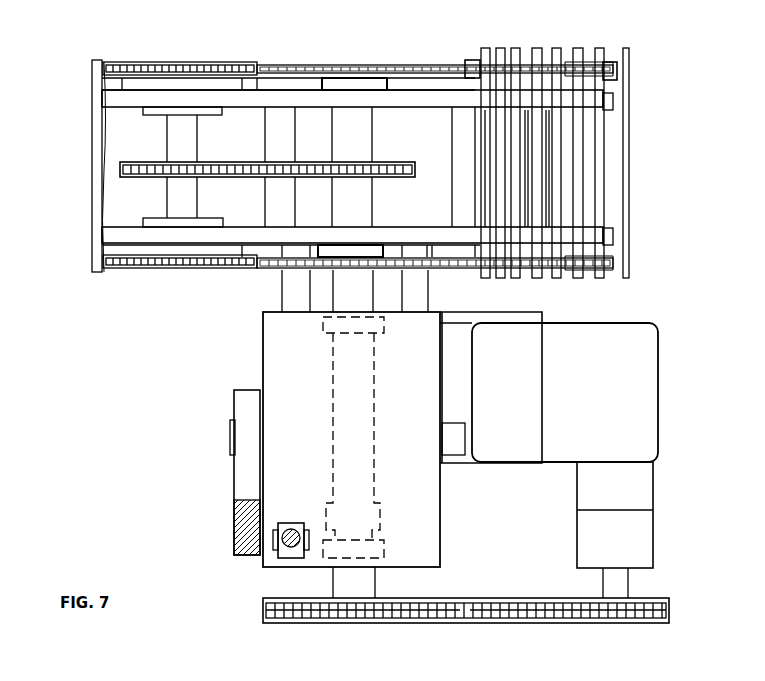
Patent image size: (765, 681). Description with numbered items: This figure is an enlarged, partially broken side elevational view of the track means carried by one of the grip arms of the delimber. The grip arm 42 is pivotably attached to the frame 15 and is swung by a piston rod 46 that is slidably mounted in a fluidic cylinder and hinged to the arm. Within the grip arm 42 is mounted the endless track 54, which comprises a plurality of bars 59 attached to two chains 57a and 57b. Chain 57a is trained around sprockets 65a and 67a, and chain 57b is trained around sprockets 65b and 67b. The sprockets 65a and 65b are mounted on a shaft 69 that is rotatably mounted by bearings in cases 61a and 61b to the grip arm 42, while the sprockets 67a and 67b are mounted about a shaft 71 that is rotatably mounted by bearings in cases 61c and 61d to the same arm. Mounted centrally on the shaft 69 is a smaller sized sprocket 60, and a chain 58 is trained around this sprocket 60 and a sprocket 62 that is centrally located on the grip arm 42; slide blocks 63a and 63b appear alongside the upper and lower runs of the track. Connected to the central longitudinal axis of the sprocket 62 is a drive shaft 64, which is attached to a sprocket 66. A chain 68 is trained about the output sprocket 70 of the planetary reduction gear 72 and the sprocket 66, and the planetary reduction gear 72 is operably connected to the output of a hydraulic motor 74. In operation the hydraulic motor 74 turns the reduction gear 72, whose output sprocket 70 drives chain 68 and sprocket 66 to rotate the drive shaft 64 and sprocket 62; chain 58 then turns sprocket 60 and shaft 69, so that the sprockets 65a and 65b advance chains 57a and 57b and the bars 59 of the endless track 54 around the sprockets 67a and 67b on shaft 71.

The frame 15 is at (234, 478).
The grip arm 42 is at (311, 92).
The piston rod 46 is at (290, 528).
The endless track 54 is at (88, 161).
The chain 57a is at (340, 68).
The chain 57b is at (268, 269).
The chain 58 is at (287, 180).
The bars 59 is at (629, 179).
The sprocket 60 is at (215, 161).
The case 61a is at (236, 72).
The case 61b is at (205, 250).
The case 61c is at (590, 62).
The case 61d is at (606, 274).
The sprocket 62 is at (384, 163).
The upper slide block 63a is at (387, 84).
The lower slide block 63b is at (373, 250).
The drive shaft 64 is at (371, 283).
The sprocket 65a is at (160, 62).
The sprocket 65b is at (127, 270).
The sprocket 66 is at (311, 612).
The sprocket 67a is at (472, 62).
The sprocket 67b is at (616, 258).
The chain 68 is at (500, 623).
The shaft 69 is at (197, 195).
The output sprocket 70 is at (665, 599).
The shaft 71 is at (541, 165).
The planetary reduction gear 72 is at (645, 521).
The hydraulic motor 74 is at (652, 410).